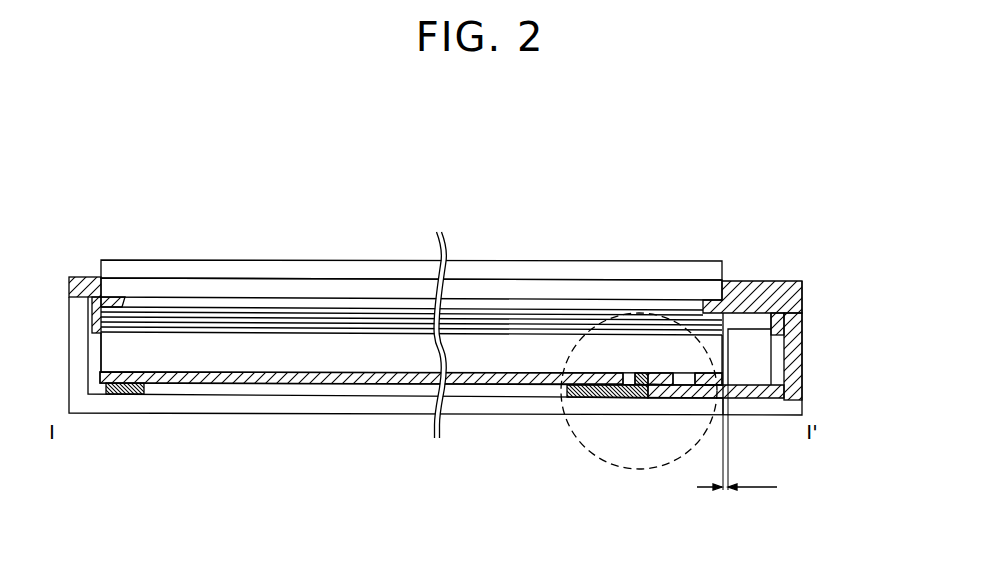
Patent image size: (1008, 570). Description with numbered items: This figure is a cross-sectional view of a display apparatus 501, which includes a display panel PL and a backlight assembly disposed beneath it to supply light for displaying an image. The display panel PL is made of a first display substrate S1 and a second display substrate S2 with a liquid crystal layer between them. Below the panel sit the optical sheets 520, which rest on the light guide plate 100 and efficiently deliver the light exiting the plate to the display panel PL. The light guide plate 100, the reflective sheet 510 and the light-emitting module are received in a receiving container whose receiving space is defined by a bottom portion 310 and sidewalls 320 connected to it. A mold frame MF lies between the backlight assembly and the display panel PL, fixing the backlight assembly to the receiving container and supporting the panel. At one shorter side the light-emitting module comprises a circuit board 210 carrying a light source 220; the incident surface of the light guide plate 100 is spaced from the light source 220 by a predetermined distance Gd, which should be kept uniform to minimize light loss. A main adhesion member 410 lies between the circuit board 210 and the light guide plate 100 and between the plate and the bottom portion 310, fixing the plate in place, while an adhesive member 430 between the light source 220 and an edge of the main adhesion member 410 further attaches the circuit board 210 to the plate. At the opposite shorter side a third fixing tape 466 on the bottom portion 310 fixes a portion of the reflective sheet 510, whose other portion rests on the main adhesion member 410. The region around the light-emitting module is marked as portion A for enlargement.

The display apparatus 501 is at (470, 326).
The display panel PL is at (411, 231).
The first display substrate S1 is at (142, 197).
The second display substrate S2 is at (165, 268).
The optical sheets 520 is at (294, 320).
The light guide plate 100 is at (366, 345).
The reflective sheet 510 is at (313, 377).
The third fixing tape 466 is at (118, 395).
The main adhesion member 410 is at (605, 398).
The adhesive member 430 is at (713, 386).
The mold frame MF is at (763, 292).
The sidewalls 320 is at (796, 326).
The light source 220 is at (765, 360).
The circuit board 210 is at (782, 391).
The bottom portion 310 is at (760, 415).
The portion A is at (620, 407).
The distance Gd is at (737, 448).